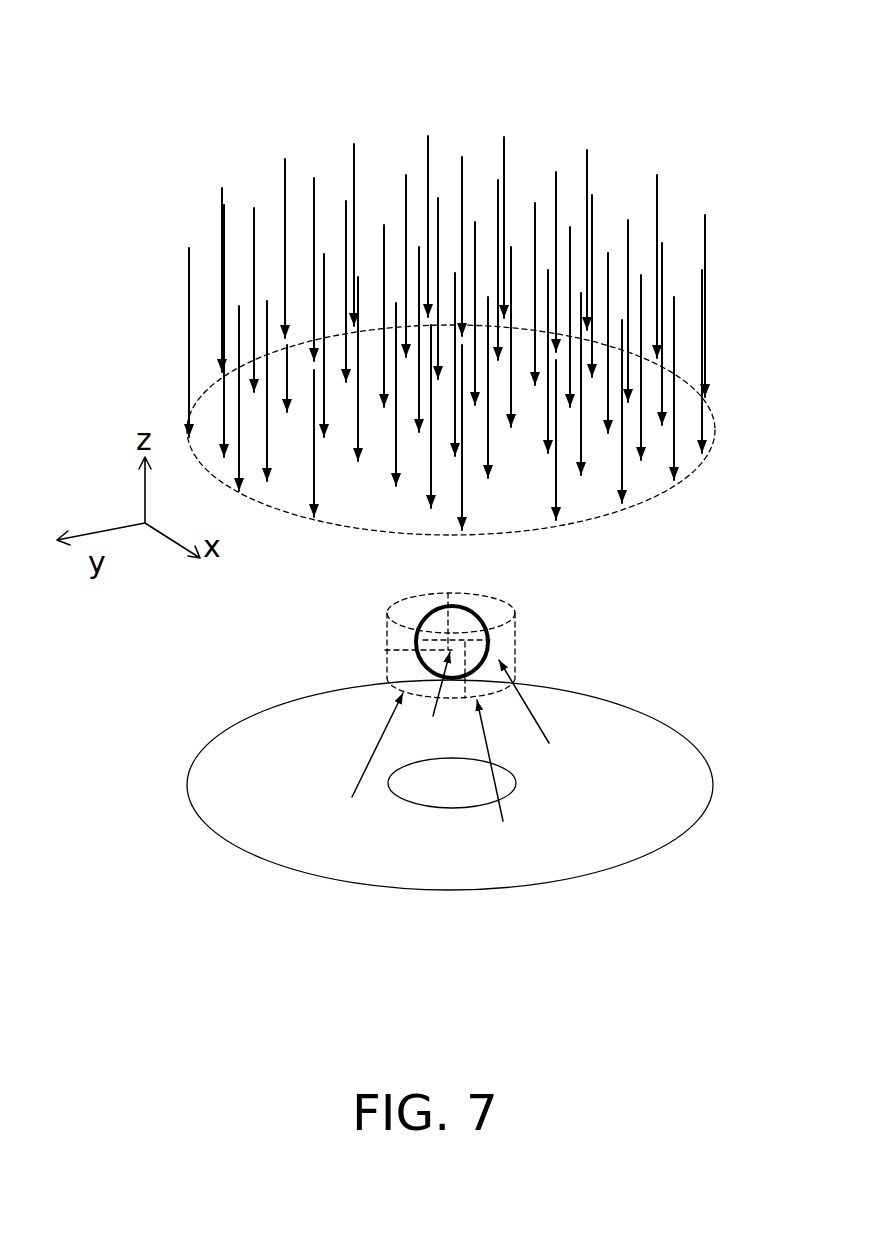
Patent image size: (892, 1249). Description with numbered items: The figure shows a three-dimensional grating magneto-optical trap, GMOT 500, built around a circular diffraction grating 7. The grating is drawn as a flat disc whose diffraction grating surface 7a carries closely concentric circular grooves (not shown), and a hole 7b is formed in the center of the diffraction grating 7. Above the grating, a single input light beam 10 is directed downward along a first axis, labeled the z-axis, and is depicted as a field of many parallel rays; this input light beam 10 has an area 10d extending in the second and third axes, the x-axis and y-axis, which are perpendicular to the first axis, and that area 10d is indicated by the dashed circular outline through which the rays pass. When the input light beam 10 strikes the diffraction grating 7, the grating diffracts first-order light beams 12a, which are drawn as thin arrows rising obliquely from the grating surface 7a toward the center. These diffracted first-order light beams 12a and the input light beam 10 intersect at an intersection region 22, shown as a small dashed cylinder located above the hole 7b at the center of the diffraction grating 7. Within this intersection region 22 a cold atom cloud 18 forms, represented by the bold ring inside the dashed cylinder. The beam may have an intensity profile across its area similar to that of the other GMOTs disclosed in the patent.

The 3D GMOT 500 is at (644, 97).
The input light beam 10 is at (703, 410).
The area 10d is at (665, 492).
The intersection region 22 is at (387, 617).
The cold atom cloud 18 is at (488, 625).
The diffraction grating surface 7a is at (342, 858).
The hole 7b is at (517, 783).
The circular diffraction grating 7 is at (642, 858).
The first-order light beams 12a is at (383, 682).